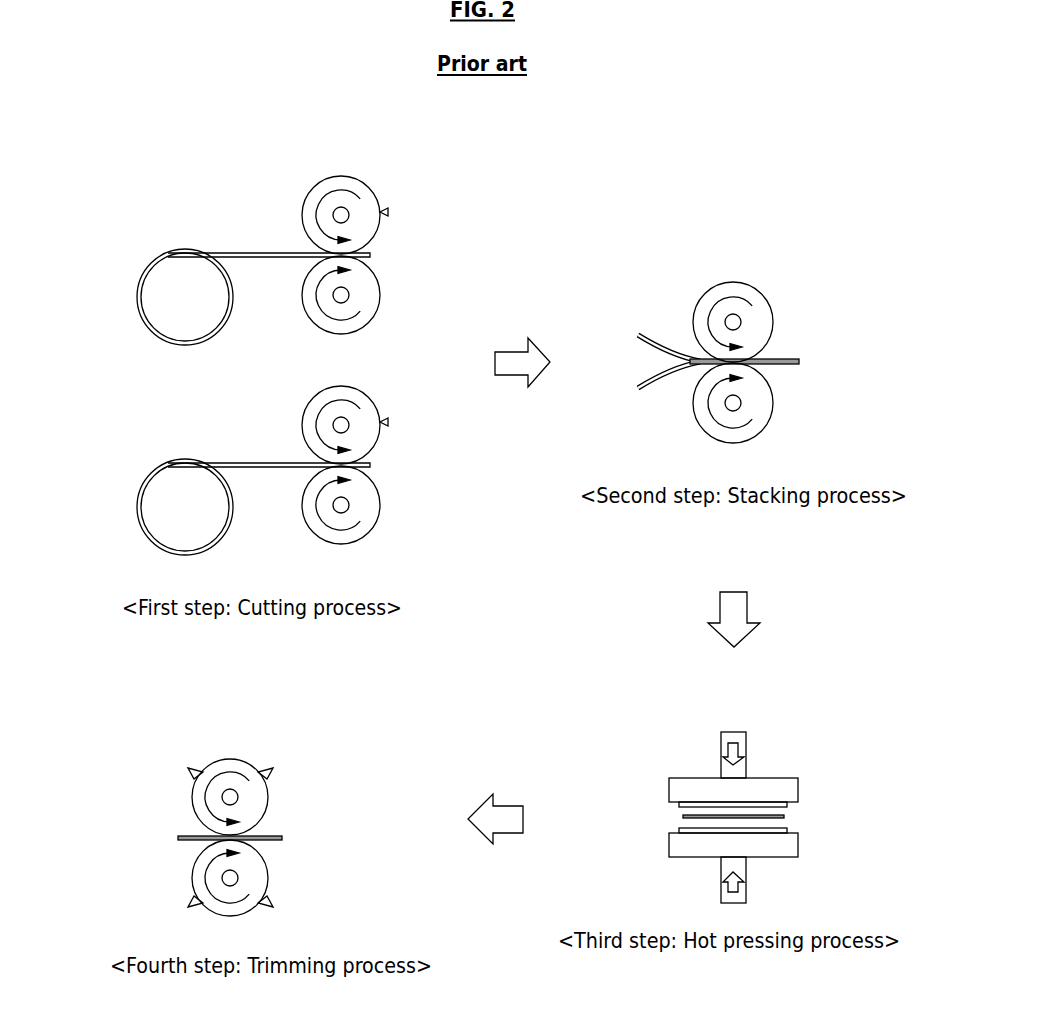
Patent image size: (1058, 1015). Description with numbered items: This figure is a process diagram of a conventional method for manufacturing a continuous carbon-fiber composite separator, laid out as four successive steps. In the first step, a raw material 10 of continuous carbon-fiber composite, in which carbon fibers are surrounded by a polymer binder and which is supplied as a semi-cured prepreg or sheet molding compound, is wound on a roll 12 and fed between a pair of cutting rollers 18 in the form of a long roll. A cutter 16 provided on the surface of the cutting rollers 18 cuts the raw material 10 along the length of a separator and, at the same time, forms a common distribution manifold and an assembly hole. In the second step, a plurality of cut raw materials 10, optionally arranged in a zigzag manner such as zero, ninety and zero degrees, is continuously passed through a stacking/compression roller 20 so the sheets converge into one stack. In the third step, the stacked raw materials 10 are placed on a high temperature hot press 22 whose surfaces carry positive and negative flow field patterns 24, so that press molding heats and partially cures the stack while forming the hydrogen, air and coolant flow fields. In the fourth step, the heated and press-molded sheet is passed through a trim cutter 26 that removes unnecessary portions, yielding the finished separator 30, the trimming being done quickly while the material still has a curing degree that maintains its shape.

The raw material 10 is at (268, 252).
The roll 12 is at (169, 272).
The cutter 16 is at (388, 212).
The cutting rollers 18 is at (364, 186).
The stacking/compression roller 20 is at (772, 310).
The high temperature hot press 22 is at (768, 778).
The flow field patterns 24 is at (783, 806).
The trim cutter 26 is at (267, 795).
The separator 30 is at (282, 838).